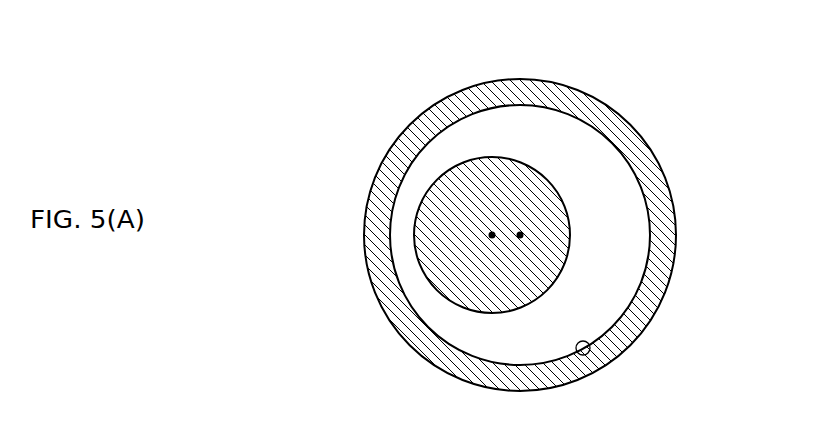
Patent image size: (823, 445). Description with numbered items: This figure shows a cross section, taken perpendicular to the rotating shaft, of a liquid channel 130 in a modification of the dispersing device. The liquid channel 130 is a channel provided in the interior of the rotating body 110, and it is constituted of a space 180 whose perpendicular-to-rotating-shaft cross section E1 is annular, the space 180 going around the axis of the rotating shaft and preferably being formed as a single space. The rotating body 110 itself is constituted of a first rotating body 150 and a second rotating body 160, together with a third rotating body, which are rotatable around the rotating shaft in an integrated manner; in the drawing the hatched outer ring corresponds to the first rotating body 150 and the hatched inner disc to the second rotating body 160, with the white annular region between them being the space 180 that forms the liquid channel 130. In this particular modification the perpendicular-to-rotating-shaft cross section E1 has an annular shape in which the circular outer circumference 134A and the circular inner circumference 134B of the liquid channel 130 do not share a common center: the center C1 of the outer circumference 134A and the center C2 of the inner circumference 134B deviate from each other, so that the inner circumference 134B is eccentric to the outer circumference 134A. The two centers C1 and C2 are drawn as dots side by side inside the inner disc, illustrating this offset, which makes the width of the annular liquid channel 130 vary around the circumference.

The rotating body 110 is at (560, 215).
The liquid channel 130 is at (518, 193).
The space 180 is at (465, 143).
The perpendicular-to-rotating-shaft cross section E1 is at (540, 133).
The first rotating body 150 is at (645, 162).
The second rotating body 160 is at (553, 185).
The outer circumference 134A is at (593, 352).
The inner circumference 134B is at (570, 262).
The center of the outer circumference C1 is at (520, 238).
The center of the inner circumference C2 is at (492, 238).